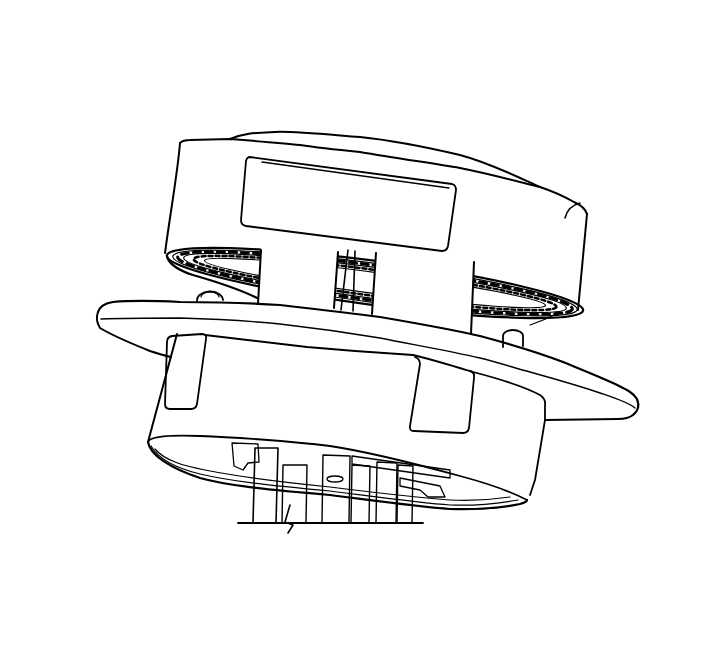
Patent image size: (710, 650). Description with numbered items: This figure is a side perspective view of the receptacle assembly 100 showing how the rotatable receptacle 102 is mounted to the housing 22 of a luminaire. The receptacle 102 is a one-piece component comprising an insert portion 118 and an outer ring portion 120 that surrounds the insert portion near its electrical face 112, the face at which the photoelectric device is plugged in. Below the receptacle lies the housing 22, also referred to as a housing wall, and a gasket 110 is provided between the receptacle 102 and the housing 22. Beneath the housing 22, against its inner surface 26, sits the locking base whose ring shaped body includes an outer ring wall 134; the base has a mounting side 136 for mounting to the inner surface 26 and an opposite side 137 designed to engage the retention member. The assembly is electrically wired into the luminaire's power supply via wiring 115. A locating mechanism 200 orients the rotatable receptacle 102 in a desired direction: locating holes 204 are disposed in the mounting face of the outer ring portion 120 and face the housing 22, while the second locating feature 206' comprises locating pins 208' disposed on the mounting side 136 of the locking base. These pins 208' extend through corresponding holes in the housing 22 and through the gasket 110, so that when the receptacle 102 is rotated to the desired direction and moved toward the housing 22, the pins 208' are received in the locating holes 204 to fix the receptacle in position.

The receptacle assembly 100 is at (150, 77).
The rotatable receptacle 102 is at (147, 253).
The gasket 110 is at (297, 320).
The electrical face 112 is at (479, 158).
The wiring 115 is at (262, 516).
The insert portion 118 is at (303, 272).
The outer ring portion 120 is at (573, 203).
The outer ring wall 134 is at (523, 487).
The mounting side 136 is at (165, 342).
The opposite side 137 is at (158, 455).
The locating mechanism 200 is at (210, 284).
The locating holes 204 is at (533, 313).
The second locating feature 206' is at (592, 314).
The locating pins 208' is at (579, 348).
The housing 22 is at (93, 320).
The inner surface 26 is at (602, 408).